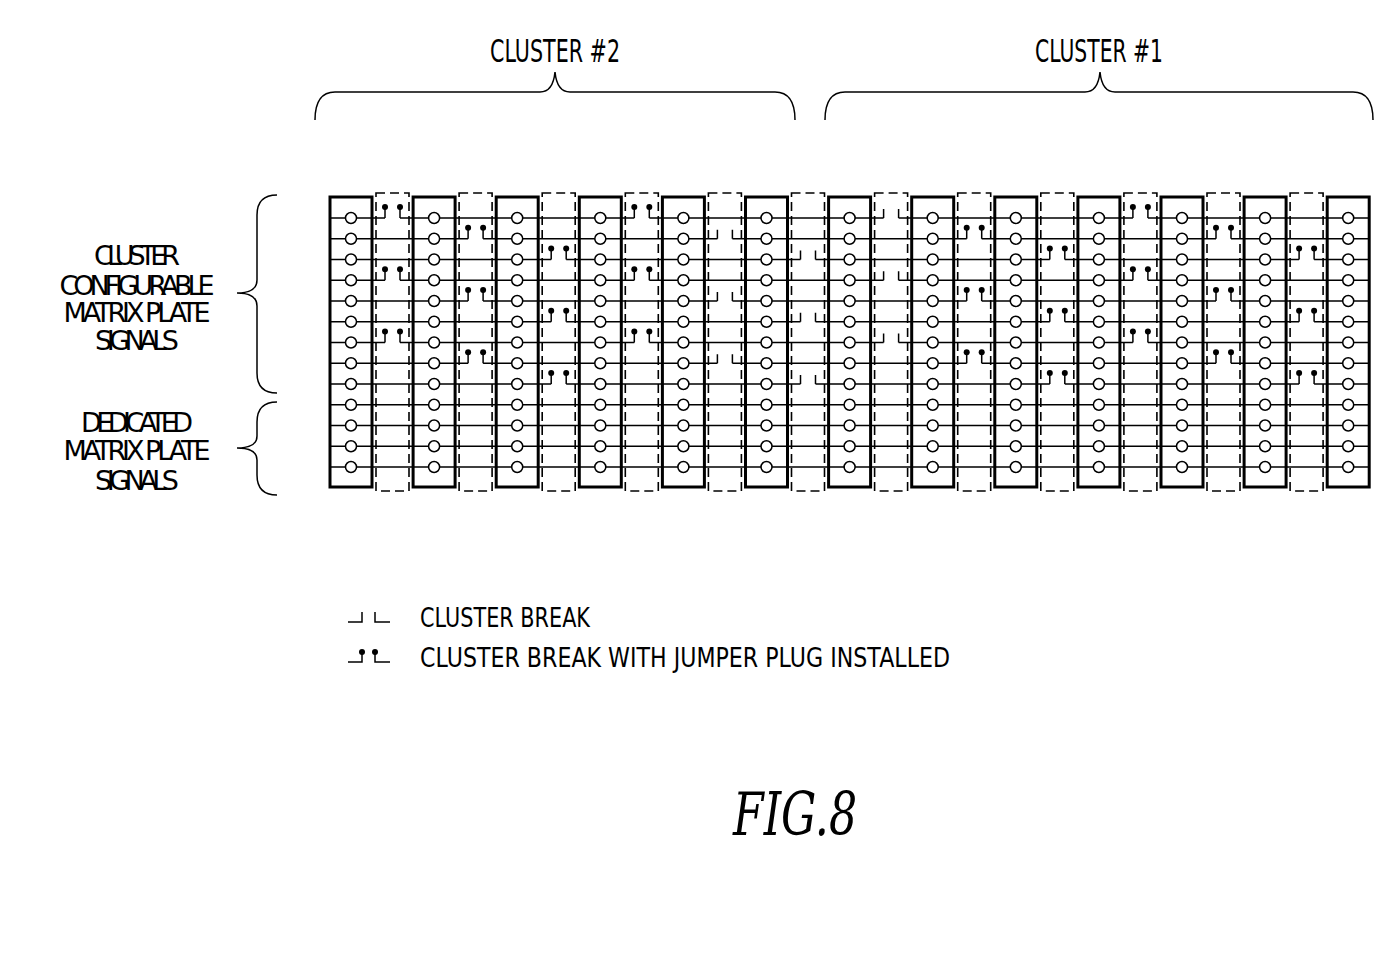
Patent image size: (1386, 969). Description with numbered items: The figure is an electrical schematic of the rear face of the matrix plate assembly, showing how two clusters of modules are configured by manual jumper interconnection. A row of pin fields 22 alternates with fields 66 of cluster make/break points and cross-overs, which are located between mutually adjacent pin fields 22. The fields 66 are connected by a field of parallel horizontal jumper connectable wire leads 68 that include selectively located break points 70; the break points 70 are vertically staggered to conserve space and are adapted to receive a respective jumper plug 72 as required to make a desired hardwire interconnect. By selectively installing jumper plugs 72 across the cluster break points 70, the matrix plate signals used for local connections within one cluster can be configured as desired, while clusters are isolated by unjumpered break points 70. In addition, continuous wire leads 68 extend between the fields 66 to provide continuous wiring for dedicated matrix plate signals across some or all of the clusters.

The pin field 22 is at (1348, 197).
The field of cluster make/break points 66 is at (392, 491).
The jumper connectable wire lead 68 is at (330, 510).
The break point 70 is at (392, 346).
The jumper plug 72 is at (399, 205).